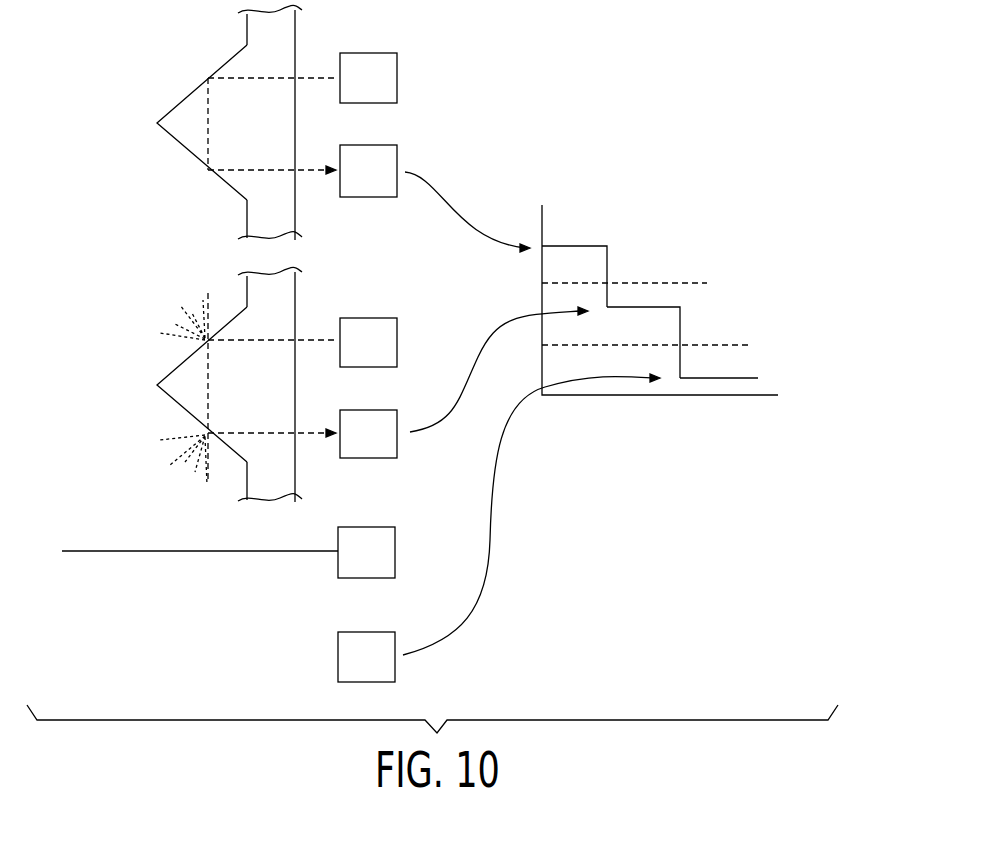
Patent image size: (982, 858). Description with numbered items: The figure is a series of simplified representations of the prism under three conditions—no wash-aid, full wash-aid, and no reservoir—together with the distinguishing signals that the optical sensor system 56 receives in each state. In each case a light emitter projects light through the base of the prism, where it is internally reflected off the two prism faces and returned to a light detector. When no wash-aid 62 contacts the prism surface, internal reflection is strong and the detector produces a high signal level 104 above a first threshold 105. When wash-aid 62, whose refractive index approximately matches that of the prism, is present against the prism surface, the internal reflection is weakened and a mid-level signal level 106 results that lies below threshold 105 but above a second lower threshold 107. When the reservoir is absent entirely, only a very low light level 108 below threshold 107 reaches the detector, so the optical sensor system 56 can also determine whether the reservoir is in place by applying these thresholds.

The optical sensor system 56 is at (447, 58).
The wash-aid 62 is at (217, 387).
The high signal level 104 is at (592, 246).
The first threshold 105 is at (692, 283).
The mid-level signal level 106 is at (670, 307).
The second lower threshold 107 is at (736, 345).
The very low light level 108 is at (743, 378).